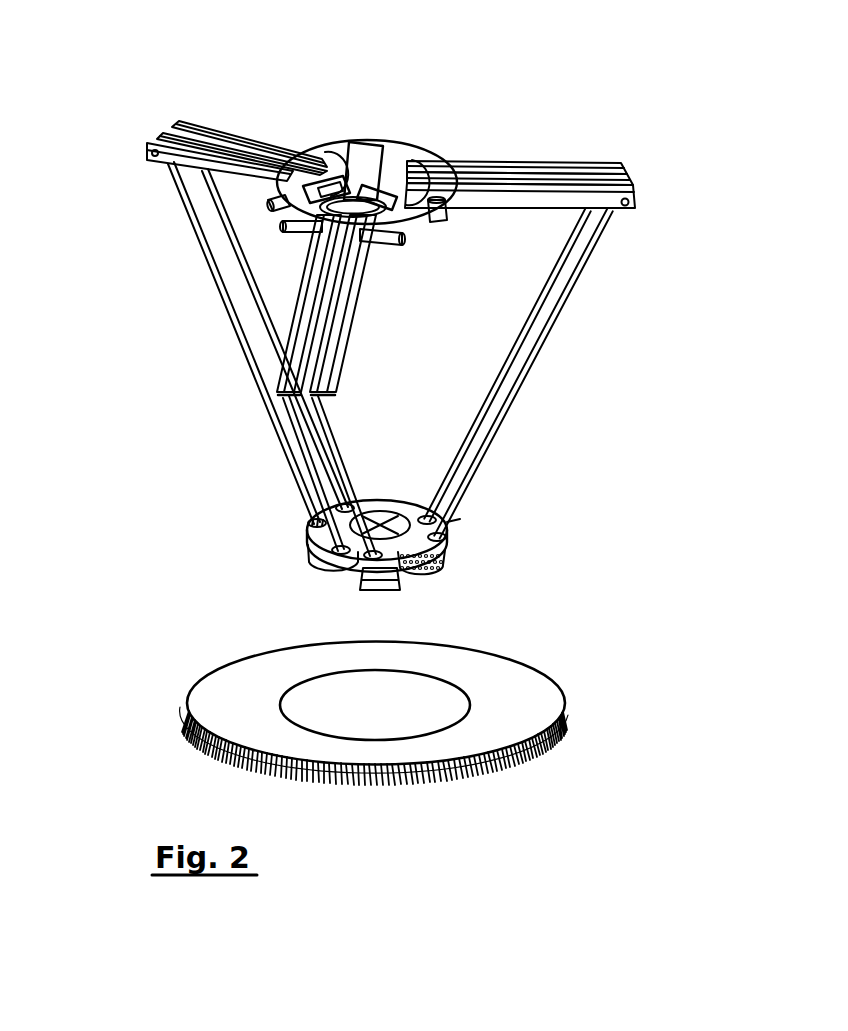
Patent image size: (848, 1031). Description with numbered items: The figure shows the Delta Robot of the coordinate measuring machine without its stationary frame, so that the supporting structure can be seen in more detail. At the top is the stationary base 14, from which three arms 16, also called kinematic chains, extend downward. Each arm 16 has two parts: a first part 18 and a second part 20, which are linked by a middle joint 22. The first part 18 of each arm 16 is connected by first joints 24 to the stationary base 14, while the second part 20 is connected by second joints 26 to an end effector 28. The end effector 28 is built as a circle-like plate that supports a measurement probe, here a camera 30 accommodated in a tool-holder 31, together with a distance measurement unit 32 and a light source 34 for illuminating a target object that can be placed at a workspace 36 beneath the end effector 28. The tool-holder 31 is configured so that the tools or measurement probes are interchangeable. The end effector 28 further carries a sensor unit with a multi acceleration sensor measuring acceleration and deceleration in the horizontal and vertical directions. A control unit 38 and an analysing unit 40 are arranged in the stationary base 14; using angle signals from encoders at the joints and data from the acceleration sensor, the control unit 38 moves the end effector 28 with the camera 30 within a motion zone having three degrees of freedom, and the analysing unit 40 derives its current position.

The stationary base 14 is at (370, 155).
The arm 16 is at (281, 271).
The first part 18 is at (512, 195).
The second part 20 is at (562, 322).
The middle joint 22 is at (633, 205).
The first joints 24 is at (408, 240).
The second joints 26 is at (443, 538).
The end effector 28 is at (317, 527).
The camera 30 is at (362, 583).
The tool-holder 31 is at (450, 520).
The distance measurement unit 32 is at (427, 583).
The light source 34 is at (327, 563).
The workspace 36 is at (170, 659).
The control unit 38 is at (350, 140).
The analysing unit 40 is at (387, 157).